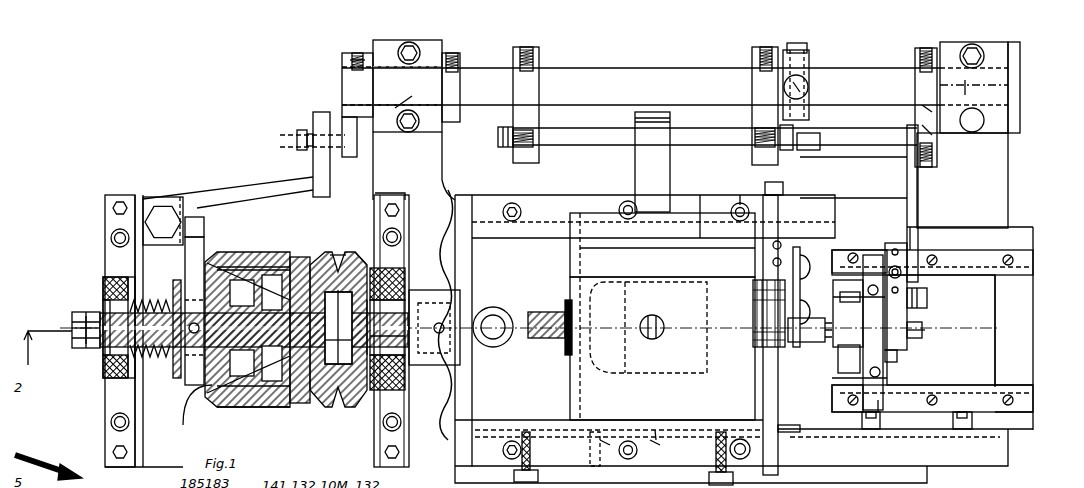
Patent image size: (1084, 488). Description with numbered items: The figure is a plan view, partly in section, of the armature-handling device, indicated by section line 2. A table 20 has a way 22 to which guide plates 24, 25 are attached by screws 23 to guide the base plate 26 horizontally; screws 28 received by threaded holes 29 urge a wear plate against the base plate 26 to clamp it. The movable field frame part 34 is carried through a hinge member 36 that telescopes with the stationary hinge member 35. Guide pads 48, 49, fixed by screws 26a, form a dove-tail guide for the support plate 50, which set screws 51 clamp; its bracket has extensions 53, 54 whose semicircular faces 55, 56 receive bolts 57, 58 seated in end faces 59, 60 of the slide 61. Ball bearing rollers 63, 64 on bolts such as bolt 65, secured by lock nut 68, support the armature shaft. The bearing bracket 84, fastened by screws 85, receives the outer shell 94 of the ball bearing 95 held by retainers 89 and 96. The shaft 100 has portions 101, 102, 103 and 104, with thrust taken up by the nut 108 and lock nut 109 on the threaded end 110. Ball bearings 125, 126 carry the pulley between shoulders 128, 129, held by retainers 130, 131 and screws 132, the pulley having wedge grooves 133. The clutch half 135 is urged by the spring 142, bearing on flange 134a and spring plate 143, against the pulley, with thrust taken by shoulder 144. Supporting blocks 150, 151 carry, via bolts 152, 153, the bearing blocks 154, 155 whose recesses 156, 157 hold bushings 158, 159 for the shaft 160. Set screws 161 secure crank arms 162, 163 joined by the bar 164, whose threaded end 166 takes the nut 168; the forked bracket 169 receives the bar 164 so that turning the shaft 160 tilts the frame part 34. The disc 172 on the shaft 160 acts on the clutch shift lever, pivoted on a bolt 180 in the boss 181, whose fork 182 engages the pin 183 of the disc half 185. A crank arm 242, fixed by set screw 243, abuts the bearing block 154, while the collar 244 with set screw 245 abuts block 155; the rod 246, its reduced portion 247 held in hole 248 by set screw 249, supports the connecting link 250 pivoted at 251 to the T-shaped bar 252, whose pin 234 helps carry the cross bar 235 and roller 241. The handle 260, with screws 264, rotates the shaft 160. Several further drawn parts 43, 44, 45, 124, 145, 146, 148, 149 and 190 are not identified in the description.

The section line 2 is at (652, 459).
The table 20 is at (1000, 447).
The way 22 is at (553, 200).
The screws 23 is at (512, 218).
The guide plate 24 is at (800, 435).
The guide plate 25 is at (704, 198).
The base plate 26 is at (1015, 420).
The screws 26a is at (1008, 265).
The screws 28 is at (515, 476).
The threaded holes 29 is at (596, 445).
The field frame part 34 is at (595, 372).
The hinge member 35 is at (736, 198).
The hinge member 36 is at (655, 248).
The bolt 43 is at (714, 460).
The bracket 44 is at (617, 464).
The bracket 45 is at (675, 450).
The guide pad 48 is at (917, 400).
The guide pad 49 is at (970, 262).
The support plate 50 is at (975, 325).
The set screws 51 is at (871, 430).
The extension 53 is at (878, 400).
The extension 54 is at (868, 262).
The semicircular face 55 is at (870, 380).
The semicircular face 56 is at (870, 290).
The bolt 57 is at (850, 377).
The bolt 58 is at (873, 290).
The end face 59 is at (875, 360).
The end face 60 is at (871, 300).
The slide 61 is at (920, 332).
The ball bearing roller 63 is at (853, 362).
The ball bearing roller 64 is at (850, 299).
The bolt 65 is at (768, 142).
The lock nut 68 is at (927, 298).
The bearing bracket 84 is at (115, 222).
The screws 85 is at (118, 238).
The ball bearing retainer 89 is at (405, 263).
The outer shell 94 is at (126, 385).
The ball bearing 95 is at (108, 375).
The ball bearing retainer 96 is at (105, 360).
The shaft 100 is at (310, 395).
The shaft portion 101 is at (346, 380).
The shaft portion 102 is at (368, 395).
The shaft portion 103 is at (399, 354).
The shaft portion 104 is at (100, 355).
The nut 108 is at (80, 312).
The lock nut 109 is at (75, 320).
The threaded end 110 is at (78, 335).
The worm wheel 124 is at (337, 252).
The ball bearing 125 is at (338, 328).
The ball bearing 126 is at (368, 350).
The annular shoulder 128 is at (330, 262).
The annular shoulder 129 is at (352, 262).
The ball bearing retainer 130 is at (282, 262).
The ball bearing retainer 131 is at (387, 329).
The screws 132 is at (288, 395).
The wedge shaped circumferential grooves 133 is at (303, 257).
The flange 134a is at (178, 380).
The clutch half 135 is at (236, 262).
The spring 142 is at (149, 360).
The spring plate 143 is at (353, 60).
The annular shoulder 144 is at (388, 339).
The tab 145 is at (348, 155).
The lever 146 is at (325, 140).
The link bar 148 is at (228, 199).
The bolt 149 is at (297, 140).
The supporting block 150 is at (990, 126).
The supporting block 151 is at (427, 122).
The bolts 152 is at (975, 128).
The bolts 153 is at (410, 48).
The bearing block 154 is at (1003, 130).
The bearing block 155 is at (384, 50).
The annular recess 156 is at (970, 91).
The annular recess 157 is at (407, 95).
The bushing 158 is at (998, 68).
The bushing 159 is at (387, 66).
The shaft 160 is at (628, 82).
The set screws 161 is at (535, 50).
The crank arm 162 is at (765, 120).
The crank arm 163 is at (540, 96).
The bar 164 is at (610, 137).
The reduced threaded end portion 166 is at (523, 150).
The nut 168 is at (500, 138).
The forked bracket 169 is at (658, 168).
The disc 172 is at (357, 93).
The bolt 180 is at (163, 225).
The boss 181 is at (147, 200).
The fork 182 is at (194, 236).
The pin 183 is at (187, 313).
The disc half 185 is at (193, 360).
The plate 190 is at (800, 278).
The pin 234 is at (900, 256).
The cross bar 235 is at (895, 250).
The ball bearing roller 241 is at (810, 330).
The crank arm 242 is at (925, 95).
The set screw 243 is at (927, 48).
The collar 244 is at (452, 85).
The set screw 245 is at (455, 55).
The rod 246 is at (875, 148).
The reduced portion 247 is at (927, 138).
The hole 248 is at (930, 112).
The set screw 249 is at (928, 165).
The connecting link 250 is at (913, 208).
The pivot 251 is at (940, 249).
The crosshead 252 is at (908, 278).
The handle 260 is at (796, 86).
The screws 264 is at (797, 50).